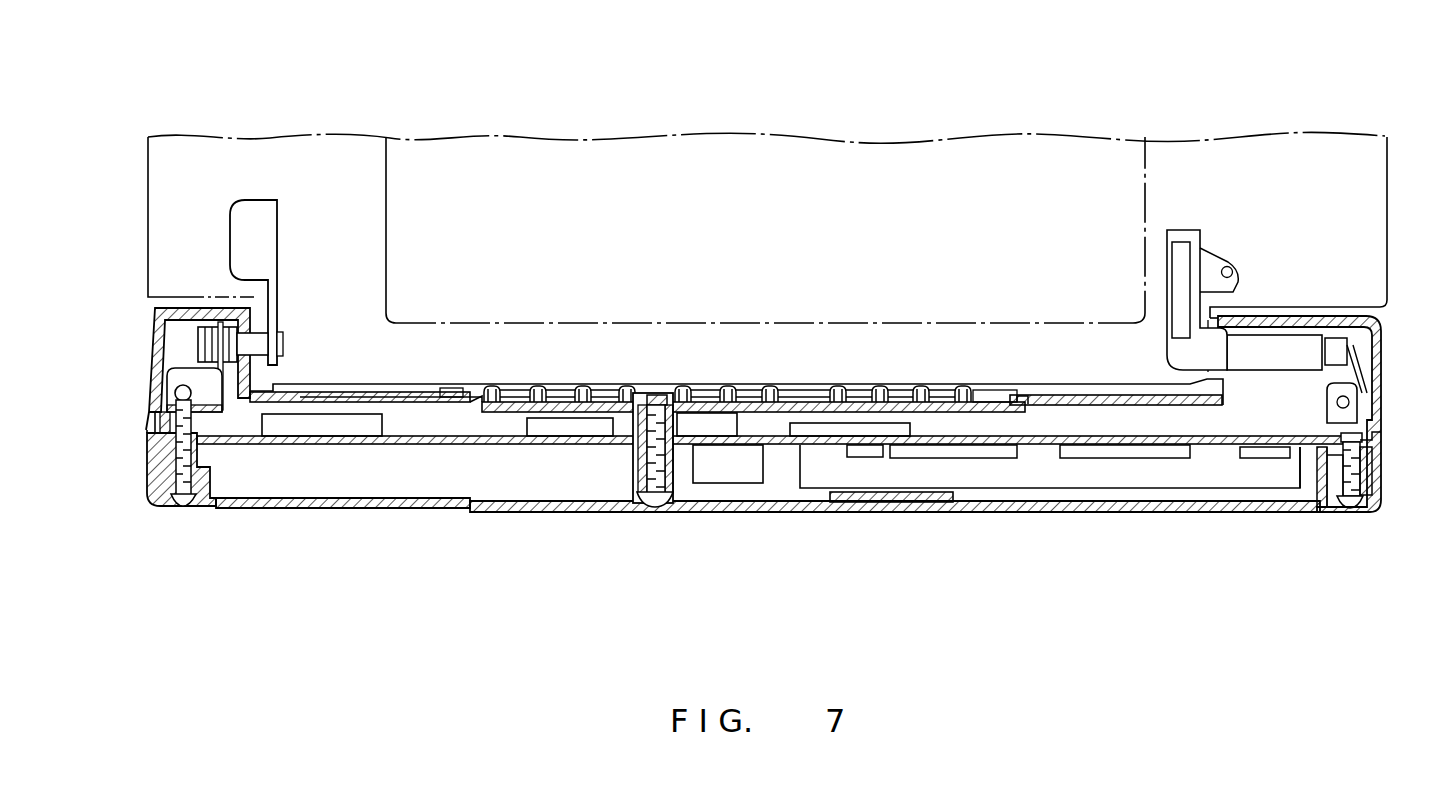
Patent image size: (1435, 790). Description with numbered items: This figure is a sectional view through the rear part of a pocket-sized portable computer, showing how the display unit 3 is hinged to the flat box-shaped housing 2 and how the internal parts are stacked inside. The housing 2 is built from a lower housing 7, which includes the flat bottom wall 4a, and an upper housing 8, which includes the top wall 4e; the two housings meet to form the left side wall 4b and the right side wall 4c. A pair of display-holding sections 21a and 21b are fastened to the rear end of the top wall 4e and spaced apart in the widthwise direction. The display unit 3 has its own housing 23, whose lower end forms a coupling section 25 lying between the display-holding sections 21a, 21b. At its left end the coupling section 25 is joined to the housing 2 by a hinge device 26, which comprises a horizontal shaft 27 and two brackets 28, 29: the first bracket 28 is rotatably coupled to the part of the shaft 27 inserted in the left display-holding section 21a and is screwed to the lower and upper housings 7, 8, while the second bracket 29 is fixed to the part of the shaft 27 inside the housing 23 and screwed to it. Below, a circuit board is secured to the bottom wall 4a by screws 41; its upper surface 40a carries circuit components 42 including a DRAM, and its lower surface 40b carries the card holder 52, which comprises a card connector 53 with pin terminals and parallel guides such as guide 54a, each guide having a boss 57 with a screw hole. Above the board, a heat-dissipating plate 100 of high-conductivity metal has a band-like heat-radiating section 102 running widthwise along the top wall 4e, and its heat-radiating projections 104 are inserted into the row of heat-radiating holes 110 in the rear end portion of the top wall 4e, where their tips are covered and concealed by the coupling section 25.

The housing 2 is at (491, 514).
The display unit 3 is at (358, 146).
The bottom wall 4a is at (782, 513).
The side wall 4b is at (152, 412).
The side wall 4c is at (1384, 436).
The top wall 4e is at (442, 386).
The lower housing 7 is at (1383, 469).
The upper housing 8 is at (1384, 400).
The display-holding section 21a is at (194, 309).
The display-holding section 21b is at (1298, 318).
The housing 23 is at (233, 143).
The coupling section 25 is at (632, 328).
The hinge device 26 is at (281, 334).
The shaft 27 is at (262, 348).
The first bracket 28 is at (210, 402).
The second bracket 29 is at (270, 217).
The upper surface 40a is at (1083, 440).
The lower surface 40b is at (1100, 446).
The screws 41 is at (185, 502).
The circuit components 42 is at (337, 423).
The card holder 52 is at (1012, 481).
The card connector 53 is at (817, 484).
The guide 54a is at (1253, 484).
The boss 57 is at (1212, 454).
The heat-dissipating plate 100 is at (985, 388).
The heat-radiating section 102 is at (730, 420).
The heat-radiating projections 104 is at (583, 387).
The heat-radiating holes 110 is at (492, 387).